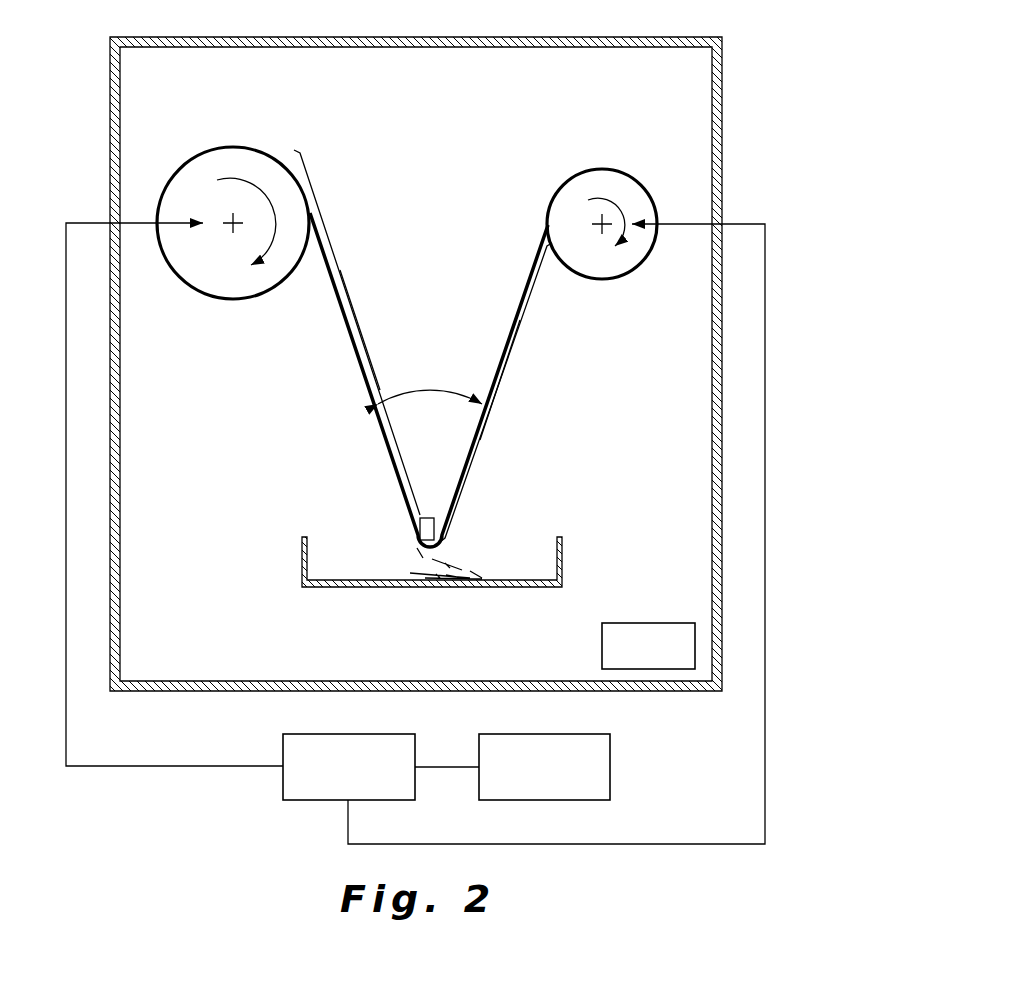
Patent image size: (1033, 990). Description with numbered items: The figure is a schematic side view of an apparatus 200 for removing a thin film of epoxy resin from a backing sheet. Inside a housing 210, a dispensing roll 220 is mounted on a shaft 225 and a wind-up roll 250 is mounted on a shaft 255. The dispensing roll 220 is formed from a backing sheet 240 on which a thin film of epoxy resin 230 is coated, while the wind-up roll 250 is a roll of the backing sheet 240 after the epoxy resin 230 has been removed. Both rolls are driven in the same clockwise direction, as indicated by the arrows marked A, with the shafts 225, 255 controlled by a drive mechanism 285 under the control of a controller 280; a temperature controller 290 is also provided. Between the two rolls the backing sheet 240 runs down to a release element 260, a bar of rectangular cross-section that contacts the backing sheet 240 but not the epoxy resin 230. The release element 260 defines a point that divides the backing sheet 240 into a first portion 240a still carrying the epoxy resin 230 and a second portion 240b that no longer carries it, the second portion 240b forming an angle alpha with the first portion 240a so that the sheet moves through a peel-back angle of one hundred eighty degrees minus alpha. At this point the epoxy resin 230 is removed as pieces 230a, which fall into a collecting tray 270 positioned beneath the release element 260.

The apparatus 200 is at (724, 48).
The housing 210 is at (443, 137).
The dispensing roll 220 is at (220, 287).
The shaft 225 is at (231, 220).
The epoxy resin 230 is at (338, 307).
The pieces 230a is at (470, 557).
The backing sheet 240 is at (520, 290).
The first portion 240a is at (366, 327).
The second portion 240b is at (504, 391).
The wind-up roll 250 is at (603, 271).
The shaft 255 is at (599, 221).
The release element 260 is at (418, 531).
The collecting tray 270 is at (371, 589).
The controller 280 is at (602, 769).
The drive mechanism 285 is at (292, 774).
The temperature controller 290 is at (641, 631).